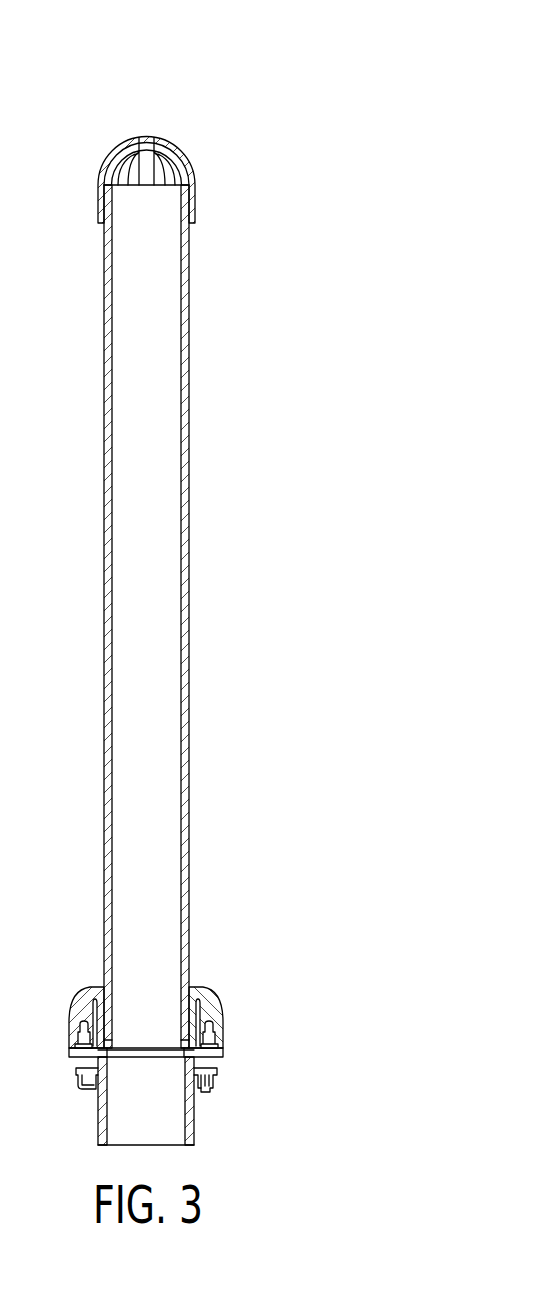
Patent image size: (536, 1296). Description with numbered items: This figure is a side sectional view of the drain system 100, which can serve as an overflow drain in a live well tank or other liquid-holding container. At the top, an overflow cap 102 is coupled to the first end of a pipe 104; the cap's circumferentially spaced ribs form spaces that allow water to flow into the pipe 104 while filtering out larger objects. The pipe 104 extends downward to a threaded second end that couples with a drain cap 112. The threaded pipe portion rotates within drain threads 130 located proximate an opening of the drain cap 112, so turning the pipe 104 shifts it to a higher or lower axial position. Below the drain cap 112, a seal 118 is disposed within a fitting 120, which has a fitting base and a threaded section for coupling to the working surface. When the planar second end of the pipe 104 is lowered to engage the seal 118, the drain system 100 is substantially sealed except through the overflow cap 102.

The drain system 100 is at (225, 579).
The overflow cap 102 is at (177, 142).
The pipe 104 is at (197, 572).
The drain cap 112 is at (226, 990).
The seal 118 is at (162, 1046).
The fitting 120 is at (205, 1119).
The drain threads 130 is at (189, 980).